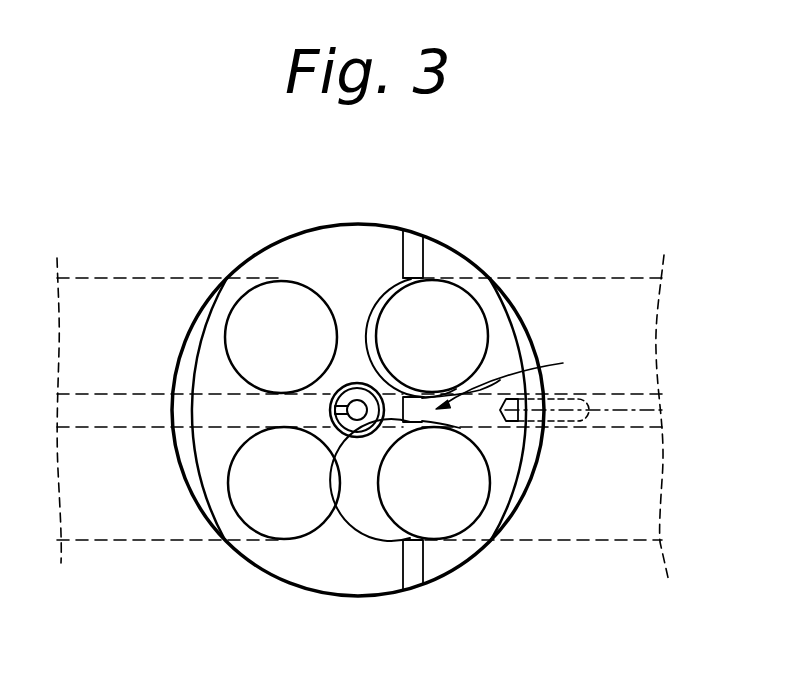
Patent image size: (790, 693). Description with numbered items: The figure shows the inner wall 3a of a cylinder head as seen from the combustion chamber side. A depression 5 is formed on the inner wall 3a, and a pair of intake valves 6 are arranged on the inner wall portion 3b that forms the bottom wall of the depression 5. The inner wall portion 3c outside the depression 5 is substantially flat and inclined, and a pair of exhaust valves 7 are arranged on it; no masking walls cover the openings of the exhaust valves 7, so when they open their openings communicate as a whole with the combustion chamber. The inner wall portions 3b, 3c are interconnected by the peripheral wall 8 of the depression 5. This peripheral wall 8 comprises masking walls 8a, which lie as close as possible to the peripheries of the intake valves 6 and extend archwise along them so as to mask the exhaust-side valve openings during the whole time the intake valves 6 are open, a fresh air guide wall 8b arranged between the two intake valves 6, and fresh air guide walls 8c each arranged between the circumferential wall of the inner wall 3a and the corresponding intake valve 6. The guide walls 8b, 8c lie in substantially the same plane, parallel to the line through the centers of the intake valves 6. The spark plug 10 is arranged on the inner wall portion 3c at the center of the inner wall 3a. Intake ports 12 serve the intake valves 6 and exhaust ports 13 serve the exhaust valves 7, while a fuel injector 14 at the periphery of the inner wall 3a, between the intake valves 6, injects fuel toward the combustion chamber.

The inner wall 3a is at (288, 272).
The inner wall portion 3b is at (503, 460).
The inner wall portion 3c is at (290, 565).
The depression 5 is at (511, 376).
The intake valves 6 is at (457, 303).
The exhaust valves 7 is at (258, 315).
The peripheral wall 8 is at (460, 428).
The masking walls 8a is at (383, 297).
The fresh air guide wall 8b is at (450, 393).
The fresh air guide walls 8c is at (413, 255).
The spark plug 10 is at (355, 396).
The intake ports 12 is at (553, 278).
The exhaust ports 13 is at (146, 278).
The fuel injector 14 is at (668, 412).